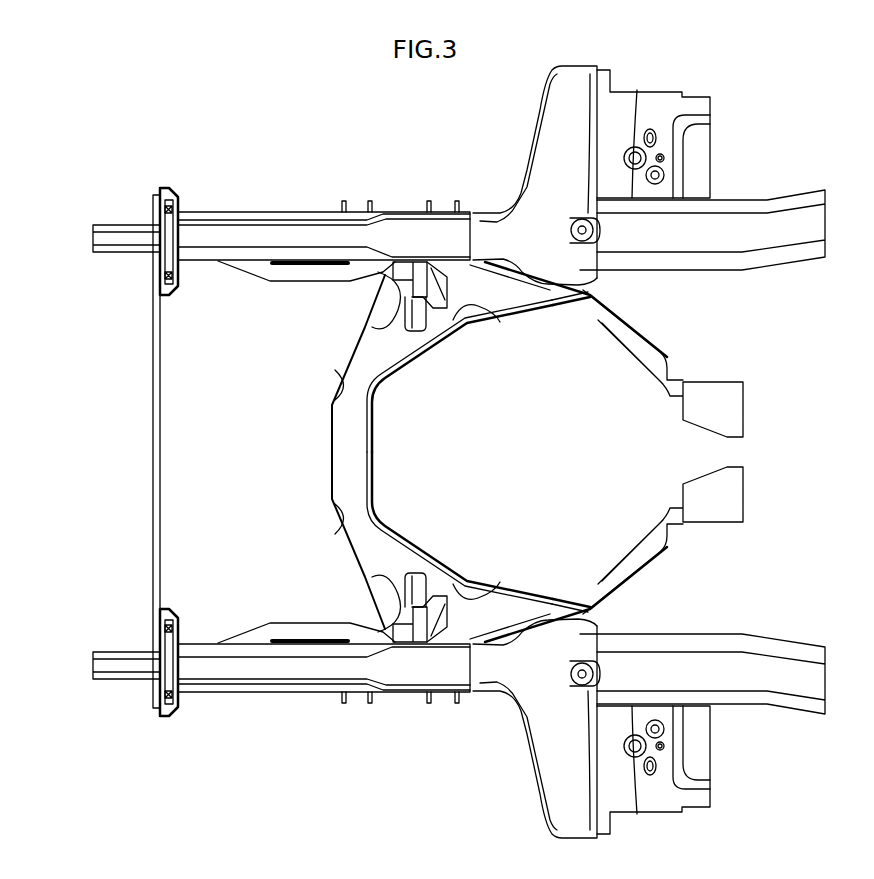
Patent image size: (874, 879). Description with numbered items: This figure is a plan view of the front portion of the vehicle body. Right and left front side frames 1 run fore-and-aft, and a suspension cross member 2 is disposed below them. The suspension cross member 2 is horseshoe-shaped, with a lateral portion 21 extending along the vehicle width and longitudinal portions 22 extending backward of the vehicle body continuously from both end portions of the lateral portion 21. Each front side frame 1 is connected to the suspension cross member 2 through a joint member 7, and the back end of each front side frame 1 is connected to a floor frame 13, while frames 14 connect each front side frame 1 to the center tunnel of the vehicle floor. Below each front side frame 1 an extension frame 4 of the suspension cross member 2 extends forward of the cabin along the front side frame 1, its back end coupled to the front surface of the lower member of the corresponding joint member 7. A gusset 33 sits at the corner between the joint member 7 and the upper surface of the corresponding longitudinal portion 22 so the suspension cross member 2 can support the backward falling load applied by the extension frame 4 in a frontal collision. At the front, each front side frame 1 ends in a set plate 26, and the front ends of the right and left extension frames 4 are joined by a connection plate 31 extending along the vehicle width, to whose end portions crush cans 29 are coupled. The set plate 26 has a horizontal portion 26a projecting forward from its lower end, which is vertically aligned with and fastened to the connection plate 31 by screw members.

The front side frame 1 is at (248, 212).
The suspension cross member 2 is at (324, 457).
The extension frame 4 is at (298, 282).
The joint member 7 is at (403, 265).
The floor frame 13 is at (795, 200).
The frame 14 is at (645, 342).
The lateral portion 21 is at (347, 427).
The longitudinal portion 22 is at (506, 300).
The set plate 26 is at (178, 200).
The horizontal portion 26a is at (170, 240).
The crush can 29 is at (112, 225).
The connection plate 31 is at (152, 478).
The gusset 33 is at (440, 275).